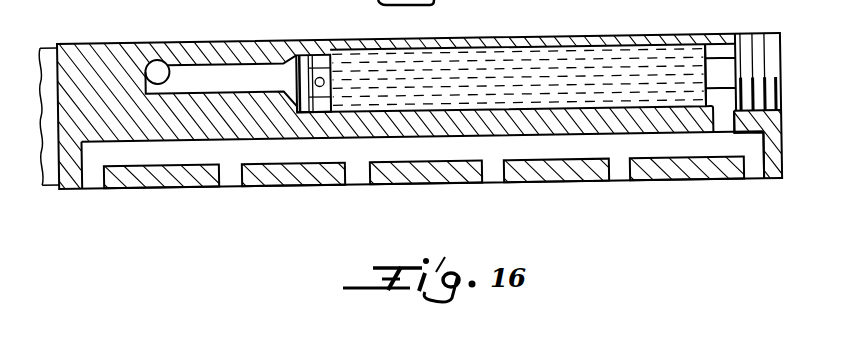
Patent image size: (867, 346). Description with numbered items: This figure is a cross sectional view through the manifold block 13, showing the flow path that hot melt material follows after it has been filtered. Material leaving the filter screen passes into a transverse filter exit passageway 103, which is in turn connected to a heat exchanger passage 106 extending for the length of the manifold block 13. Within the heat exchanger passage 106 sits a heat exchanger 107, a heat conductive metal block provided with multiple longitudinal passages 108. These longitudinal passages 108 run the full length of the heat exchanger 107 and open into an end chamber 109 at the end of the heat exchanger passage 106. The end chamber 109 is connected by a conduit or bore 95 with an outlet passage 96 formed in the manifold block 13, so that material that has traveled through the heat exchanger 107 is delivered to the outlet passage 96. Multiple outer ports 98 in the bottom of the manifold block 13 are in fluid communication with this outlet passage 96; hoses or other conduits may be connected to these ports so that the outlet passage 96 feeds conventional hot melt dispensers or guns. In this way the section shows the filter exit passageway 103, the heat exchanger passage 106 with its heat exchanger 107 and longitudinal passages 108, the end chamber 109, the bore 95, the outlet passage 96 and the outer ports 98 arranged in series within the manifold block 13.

The housing body 13 is at (104, 67).
The conduit or bore 95 is at (723, 122).
The outlet passage 96 is at (413, 153).
The outer ports 98 is at (224, 181).
The transverse filter exit passageway 103 is at (160, 72).
The heat exchanger passage 106 is at (313, 65).
The heat exchanger 107 is at (523, 62).
The longitudinal passages 108 is at (622, 58).
The end chamber 109 is at (720, 53).